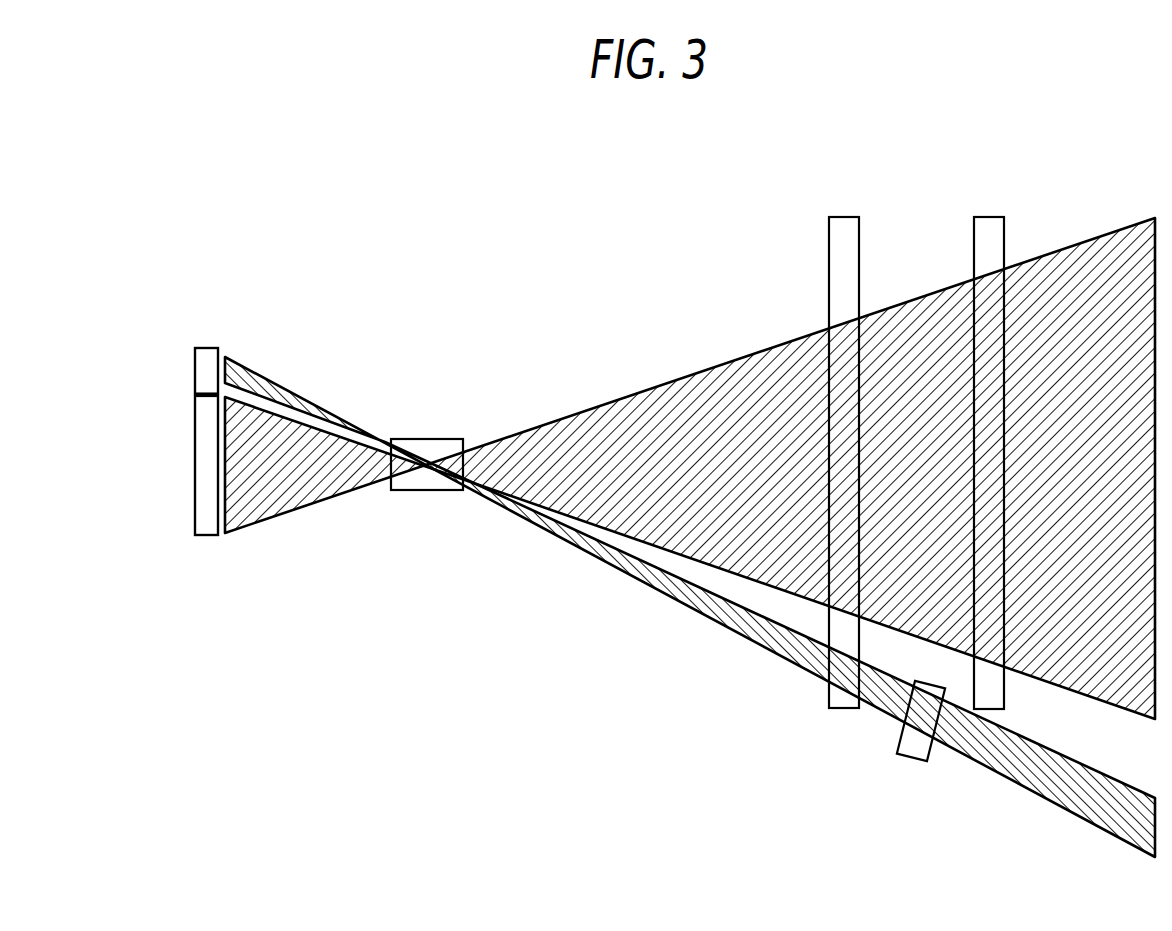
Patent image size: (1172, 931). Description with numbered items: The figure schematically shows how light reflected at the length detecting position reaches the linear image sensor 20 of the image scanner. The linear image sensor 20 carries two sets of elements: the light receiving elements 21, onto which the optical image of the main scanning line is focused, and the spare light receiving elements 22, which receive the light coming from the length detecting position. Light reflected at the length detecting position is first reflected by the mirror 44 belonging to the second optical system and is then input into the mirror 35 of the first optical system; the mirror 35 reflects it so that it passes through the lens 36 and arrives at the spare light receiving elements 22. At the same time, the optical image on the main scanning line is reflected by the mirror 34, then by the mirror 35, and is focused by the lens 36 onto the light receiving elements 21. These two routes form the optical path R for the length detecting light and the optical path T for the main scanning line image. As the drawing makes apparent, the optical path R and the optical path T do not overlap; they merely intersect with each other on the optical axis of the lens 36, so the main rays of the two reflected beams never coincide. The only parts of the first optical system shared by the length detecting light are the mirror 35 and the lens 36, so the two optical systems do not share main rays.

The linear image sensor 20 is at (122, 320).
The light receiving elements 21 is at (193, 462).
The spare light receiving elements 22 is at (193, 360).
The mirror 34 is at (989, 217).
The mirror 35 is at (845, 217).
The lens 36 is at (433, 438).
The mirror 44 is at (908, 762).
The optical path T is at (705, 371).
The optical path R is at (698, 617).